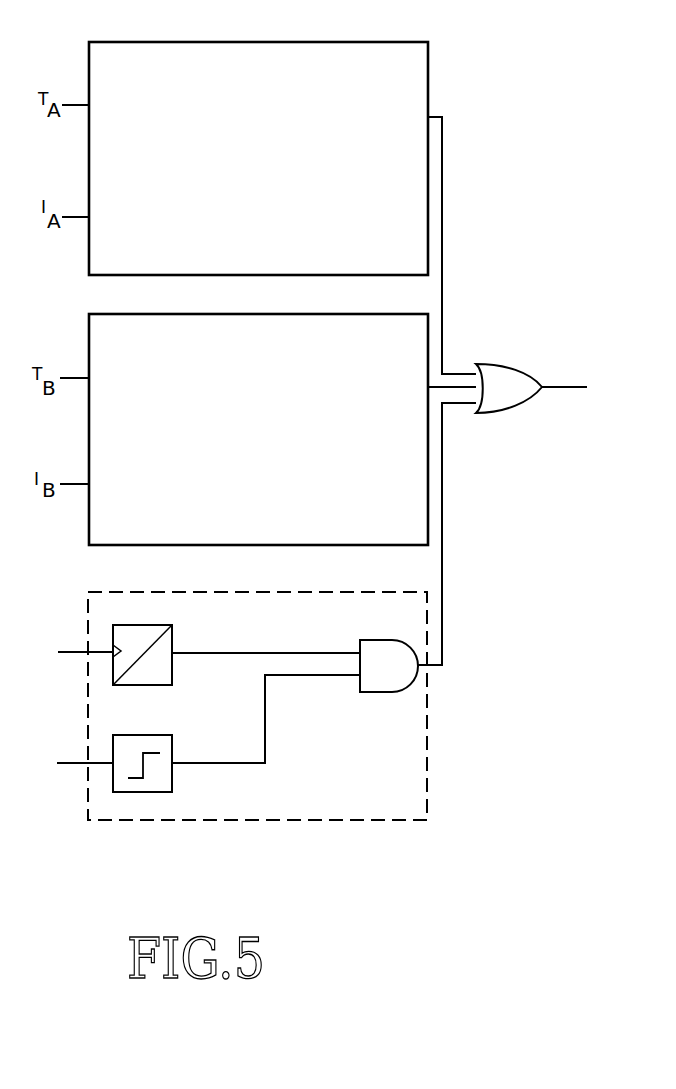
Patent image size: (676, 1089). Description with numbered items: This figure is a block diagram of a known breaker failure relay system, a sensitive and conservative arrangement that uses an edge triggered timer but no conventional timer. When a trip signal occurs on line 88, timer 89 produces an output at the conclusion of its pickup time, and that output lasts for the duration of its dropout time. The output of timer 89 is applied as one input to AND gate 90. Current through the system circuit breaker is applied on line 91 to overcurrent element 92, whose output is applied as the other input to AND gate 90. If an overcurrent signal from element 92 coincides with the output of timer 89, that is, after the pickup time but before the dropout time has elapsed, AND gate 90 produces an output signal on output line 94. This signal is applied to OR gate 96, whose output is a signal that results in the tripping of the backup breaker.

The line 88 is at (72, 651).
The timer 89 is at (172, 634).
The AND gate 90 is at (387, 692).
The line 91 is at (73, 764).
The overcurrent element 92 is at (172, 770).
The output line 94 is at (443, 568).
The OR gate 96 is at (515, 413).